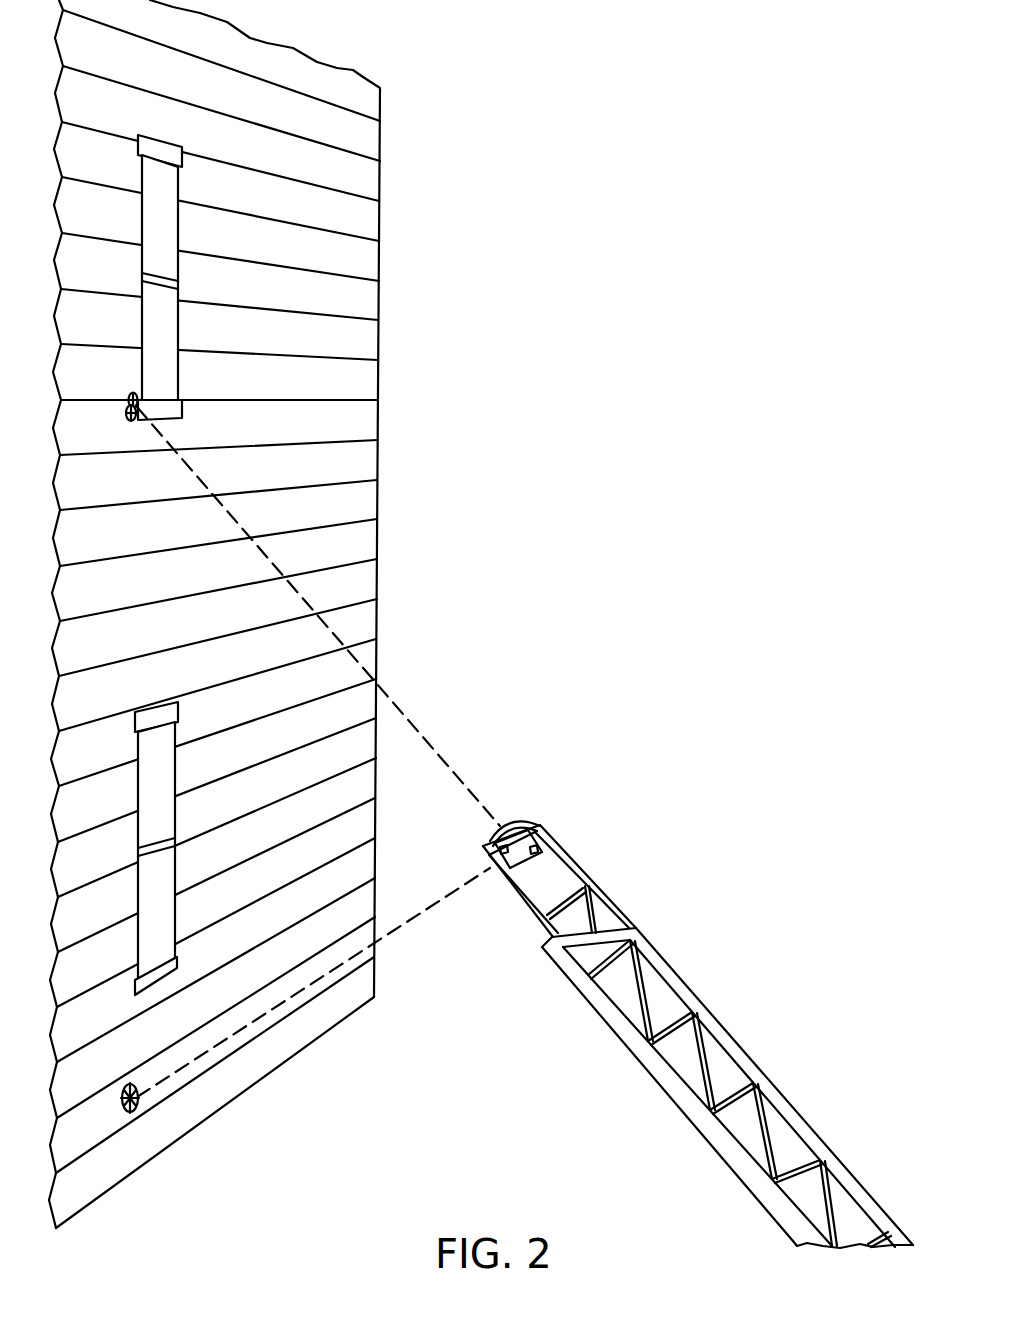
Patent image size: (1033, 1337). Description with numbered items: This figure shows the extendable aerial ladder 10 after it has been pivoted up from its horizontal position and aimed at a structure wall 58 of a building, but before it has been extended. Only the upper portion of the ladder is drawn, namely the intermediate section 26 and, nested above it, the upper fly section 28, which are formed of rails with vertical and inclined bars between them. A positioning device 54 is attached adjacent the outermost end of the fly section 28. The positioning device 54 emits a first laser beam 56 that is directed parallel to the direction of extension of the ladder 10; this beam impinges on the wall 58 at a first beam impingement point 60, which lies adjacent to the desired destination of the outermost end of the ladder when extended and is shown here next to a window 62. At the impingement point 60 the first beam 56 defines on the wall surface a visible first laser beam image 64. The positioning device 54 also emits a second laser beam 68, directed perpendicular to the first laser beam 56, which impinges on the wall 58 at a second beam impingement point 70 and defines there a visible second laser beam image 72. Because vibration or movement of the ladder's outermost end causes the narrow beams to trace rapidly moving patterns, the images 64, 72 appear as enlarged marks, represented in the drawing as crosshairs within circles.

The aerial ladder 10 is at (698, 1017).
The intermediate section 26 is at (688, 982).
The fly section 28 is at (565, 850).
The positioning device 54 is at (520, 846).
The first laser beam 56 is at (433, 740).
The structure wall 58 is at (368, 381).
The first beam impingement point 60 is at (128, 399).
The window 62 is at (170, 325).
The first laser beam image 64 is at (126, 412).
The second laser beam 68 is at (428, 913).
The second beam impingement point 70 is at (130, 1113).
The second laser beam image 72 is at (132, 1084).